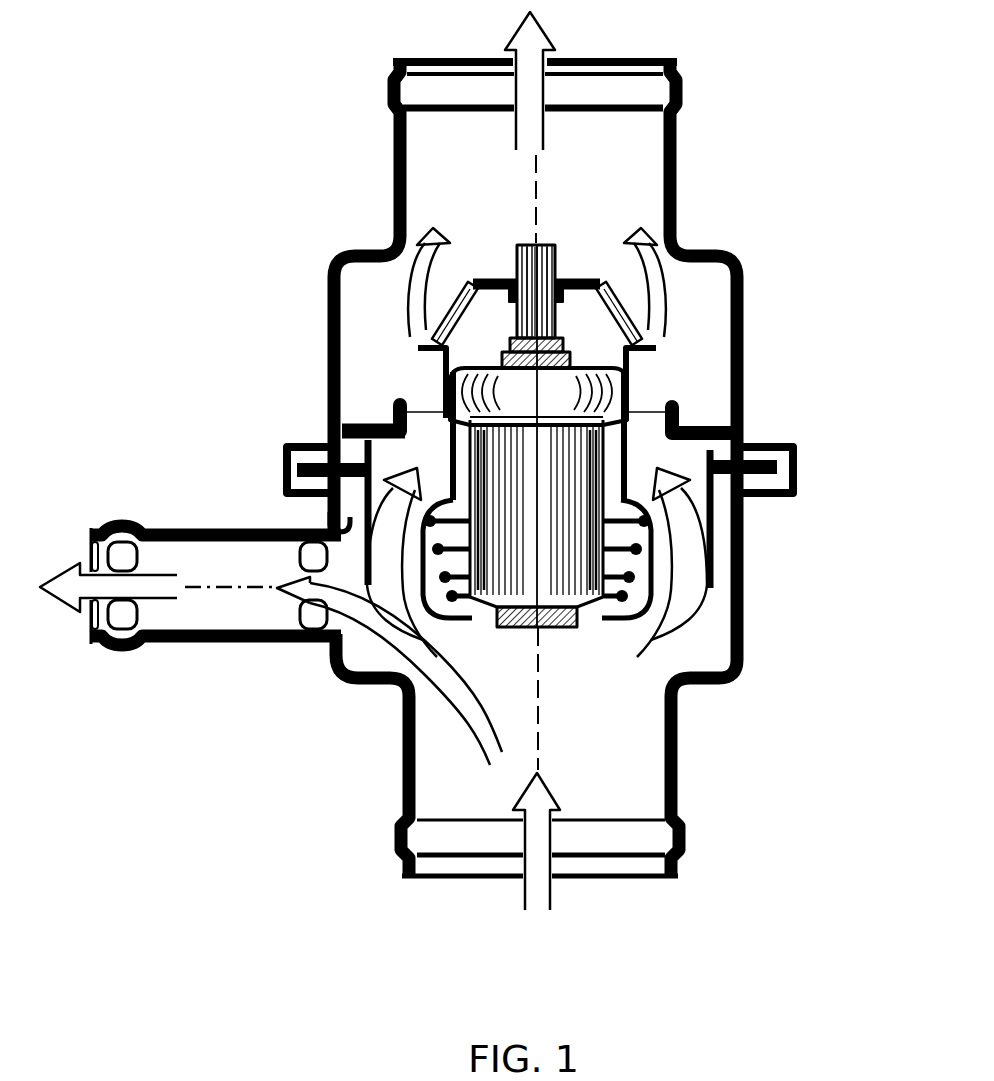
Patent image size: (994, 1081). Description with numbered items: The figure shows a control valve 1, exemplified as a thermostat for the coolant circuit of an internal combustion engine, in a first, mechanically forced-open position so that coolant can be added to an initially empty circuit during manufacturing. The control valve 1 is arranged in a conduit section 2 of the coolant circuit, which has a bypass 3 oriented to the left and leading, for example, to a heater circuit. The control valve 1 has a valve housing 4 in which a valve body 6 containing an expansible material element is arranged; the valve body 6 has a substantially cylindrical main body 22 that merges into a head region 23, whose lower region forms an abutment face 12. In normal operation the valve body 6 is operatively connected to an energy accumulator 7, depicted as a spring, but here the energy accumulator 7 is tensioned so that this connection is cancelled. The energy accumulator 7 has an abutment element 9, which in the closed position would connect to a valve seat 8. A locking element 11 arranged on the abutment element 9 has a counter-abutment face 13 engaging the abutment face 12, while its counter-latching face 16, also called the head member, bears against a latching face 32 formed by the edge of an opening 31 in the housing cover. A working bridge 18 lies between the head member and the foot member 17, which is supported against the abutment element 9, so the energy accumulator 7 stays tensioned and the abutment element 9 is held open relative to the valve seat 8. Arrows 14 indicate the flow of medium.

The control valve 1 is at (390, 330).
The conduit section 2 is at (681, 773).
The bypass 3 is at (217, 643).
The valve housing 4 is at (390, 403).
The valve body 6 is at (605, 613).
The energy accumulator 7 is at (330, 523).
The valve seat 8 is at (383, 423).
The abutment element 9 is at (300, 450).
The locking element 11 is at (425, 386).
The abutment face 12 is at (630, 387).
The counter-abutment face 13 is at (644, 402).
The arrows 14 is at (525, 118).
The counter-latching face 16 is at (652, 348).
The foot member 17 is at (640, 500).
The working bridge 18 is at (644, 440).
The main body 22 is at (547, 513).
The head region 23 is at (553, 392).
The opening 31 is at (652, 353).
The latching face 32 is at (638, 343).